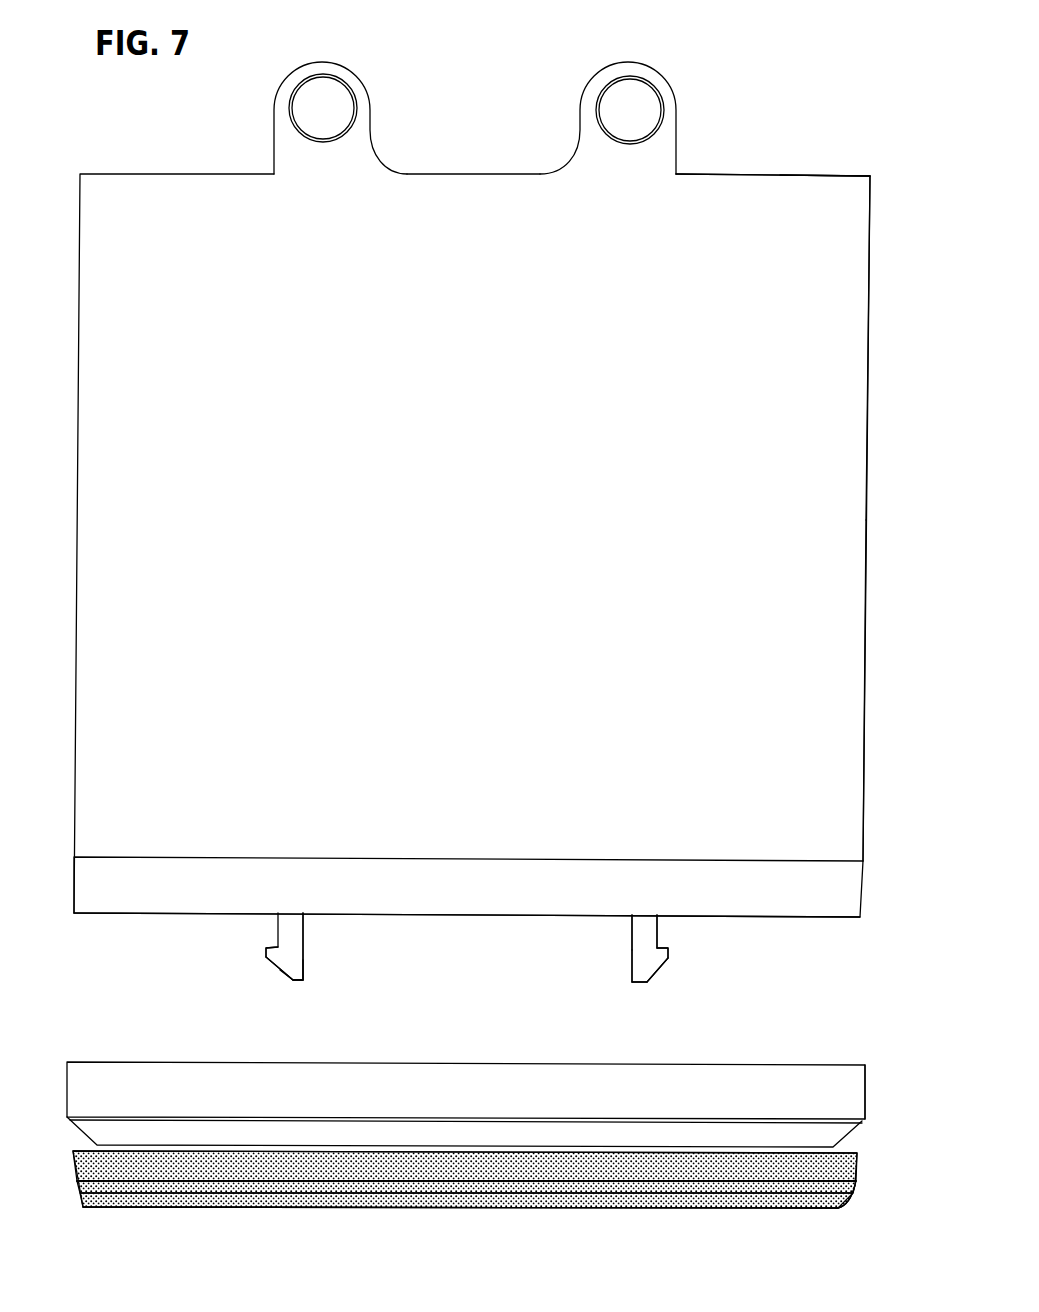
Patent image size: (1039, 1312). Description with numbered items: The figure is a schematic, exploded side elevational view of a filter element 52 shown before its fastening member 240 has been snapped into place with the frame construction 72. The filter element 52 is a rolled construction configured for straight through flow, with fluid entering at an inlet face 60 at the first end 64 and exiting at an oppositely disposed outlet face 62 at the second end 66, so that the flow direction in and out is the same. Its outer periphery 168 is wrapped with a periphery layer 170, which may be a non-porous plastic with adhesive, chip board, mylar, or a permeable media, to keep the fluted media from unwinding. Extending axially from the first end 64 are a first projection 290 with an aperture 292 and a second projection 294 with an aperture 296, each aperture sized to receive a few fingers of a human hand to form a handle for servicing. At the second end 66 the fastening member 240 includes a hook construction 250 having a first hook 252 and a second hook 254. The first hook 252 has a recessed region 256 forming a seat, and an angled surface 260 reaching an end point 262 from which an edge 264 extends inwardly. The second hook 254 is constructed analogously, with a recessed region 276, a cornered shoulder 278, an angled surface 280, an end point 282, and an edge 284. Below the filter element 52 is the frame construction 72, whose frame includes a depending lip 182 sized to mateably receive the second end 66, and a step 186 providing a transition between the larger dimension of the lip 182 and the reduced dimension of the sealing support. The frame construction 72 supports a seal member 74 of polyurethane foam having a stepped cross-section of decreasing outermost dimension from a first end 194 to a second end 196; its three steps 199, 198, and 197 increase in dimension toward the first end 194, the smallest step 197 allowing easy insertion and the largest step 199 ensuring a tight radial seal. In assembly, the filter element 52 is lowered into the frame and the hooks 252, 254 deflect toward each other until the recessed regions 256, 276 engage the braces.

The filter element 52 is at (470, 110).
The inlet face 60 is at (780, 176).
The first end 64 is at (822, 176).
The outlet face 62 is at (113, 915).
The second end 66 is at (140, 915).
The outer periphery 168 is at (867, 466).
The periphery layer 170 is at (866, 584).
The projection 290 is at (321, 62).
The aperture 292 is at (292, 108).
The second projection 294 is at (628, 64).
The aperture 296 is at (659, 100).
The hook construction 250 is at (238, 934).
The first hook 252 is at (305, 968).
The recessed region 256 is at (278, 948).
The surface 260 is at (280, 970).
The end point 262 is at (292, 982).
The edge 264 is at (305, 935).
The fastening member 240 is at (704, 949).
The recessed region 276 is at (658, 926).
The cornered shoulder 278 is at (697, 975).
The angled surface 280 is at (666, 990).
The end point 282 is at (620, 1001).
The edge 284 is at (631, 945).
The second hook 254 is at (631, 967).
The frame construction 72 is at (67, 1083).
The depending lip 182 is at (866, 1075).
The step 186 is at (845, 1134).
The seal member 74 is at (77, 1165).
The first end 194 is at (859, 1163).
The step 199 is at (78, 1170).
The step 198 is at (80, 1190).
The step 197 is at (83, 1205).
The second end 196 is at (838, 1209).